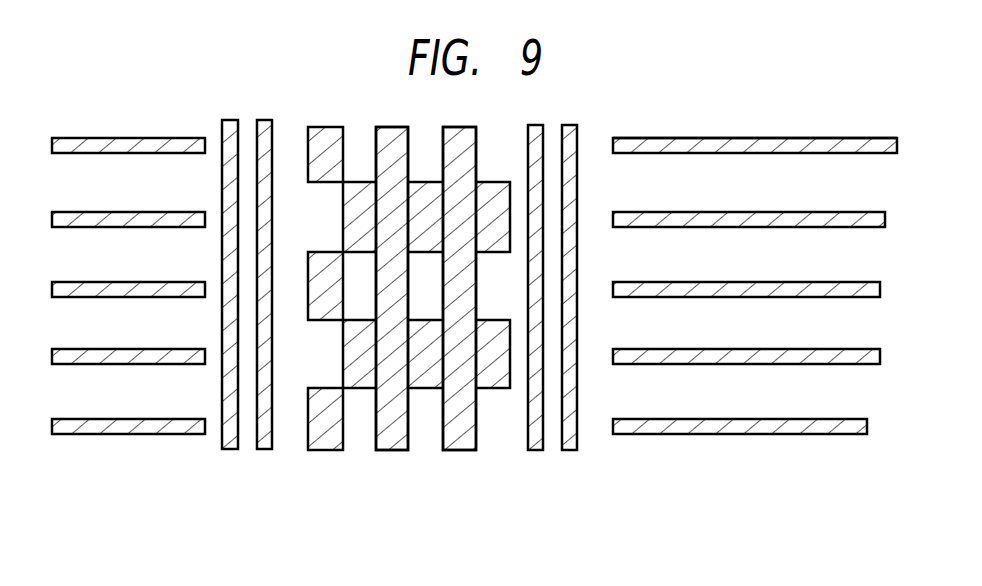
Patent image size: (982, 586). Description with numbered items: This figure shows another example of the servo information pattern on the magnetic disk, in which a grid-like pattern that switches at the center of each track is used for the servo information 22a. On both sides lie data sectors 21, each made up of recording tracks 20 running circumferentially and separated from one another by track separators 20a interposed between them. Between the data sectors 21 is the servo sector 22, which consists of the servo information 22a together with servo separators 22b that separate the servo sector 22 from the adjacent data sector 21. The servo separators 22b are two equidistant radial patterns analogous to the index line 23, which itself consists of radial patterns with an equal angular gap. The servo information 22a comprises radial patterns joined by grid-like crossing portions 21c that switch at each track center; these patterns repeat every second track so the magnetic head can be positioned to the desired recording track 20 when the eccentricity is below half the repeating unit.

The recording track 20 is at (658, 170).
The track separator 20a is at (742, 147).
The data sector 21 is at (474, 308).
The cross connecting conductor 21c is at (500, 267).
The servo sector 22 is at (368, 349).
The servo information 22a is at (414, 324).
The servo separator 22b is at (287, 470).
The index line 23 is at (585, 470).